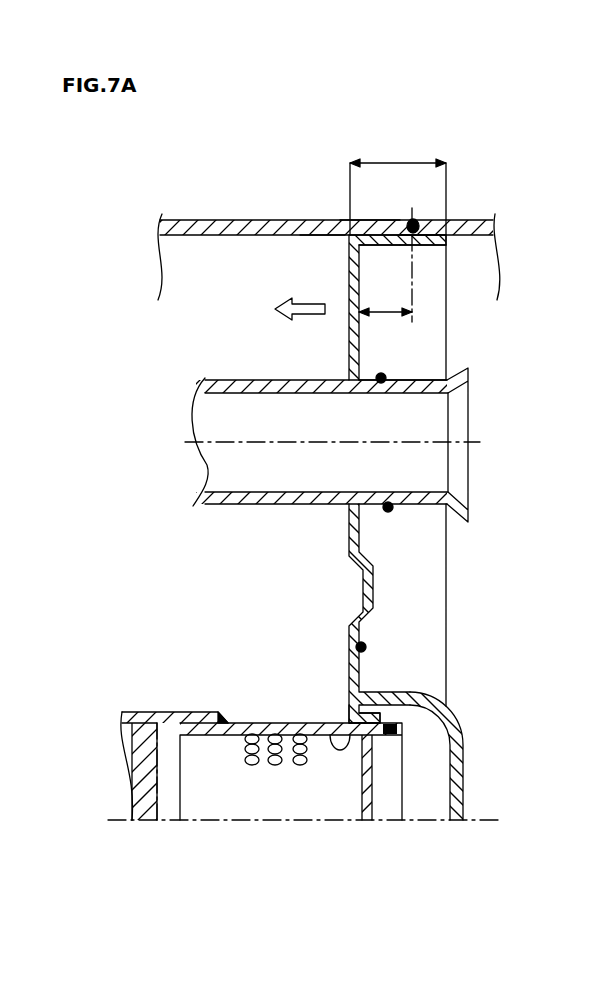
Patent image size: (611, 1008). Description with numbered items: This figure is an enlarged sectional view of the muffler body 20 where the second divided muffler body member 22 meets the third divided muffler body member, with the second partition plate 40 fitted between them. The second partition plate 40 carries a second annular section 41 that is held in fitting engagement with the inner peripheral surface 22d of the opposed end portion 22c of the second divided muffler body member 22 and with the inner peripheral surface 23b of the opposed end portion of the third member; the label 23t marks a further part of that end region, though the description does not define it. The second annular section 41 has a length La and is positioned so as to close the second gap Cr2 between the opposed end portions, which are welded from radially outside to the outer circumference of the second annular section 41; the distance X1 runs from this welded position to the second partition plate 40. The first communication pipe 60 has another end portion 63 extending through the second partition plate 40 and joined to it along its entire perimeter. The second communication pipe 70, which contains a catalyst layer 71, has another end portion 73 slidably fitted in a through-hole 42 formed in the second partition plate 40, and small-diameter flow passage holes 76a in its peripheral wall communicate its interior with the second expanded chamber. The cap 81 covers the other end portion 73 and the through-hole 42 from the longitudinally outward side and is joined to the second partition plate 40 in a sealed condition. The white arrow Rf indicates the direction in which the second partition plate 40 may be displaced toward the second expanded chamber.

The second divided muffler body member 22 is at (305, 477).
The muffler body 20 is at (200, 216).
The opposed end portion 22c is at (376, 220).
The inner peripheral surface 22d is at (323, 236).
The top end of bracket flange 23t is at (433, 220).
The inner peripheral surface 23b is at (470, 236).
The second annular section 41 is at (400, 245).
The second partition plate 40 is at (360, 553).
The through-hole 42 is at (330, 745).
The first communication pipe 60 is at (414, 367).
The other end portion 63 is at (438, 427).
The cap 81 is at (463, 762).
The second communication pipe 70 is at (197, 712).
The catalyst layer 71 is at (143, 733).
The other end portion 73 is at (270, 735).
The flow passage holes 76a is at (253, 766).
The second gap Cr2 is at (401, 221).
The length La is at (398, 259).
The distance X1 is at (385, 301).
The white arrow Rf is at (282, 311).